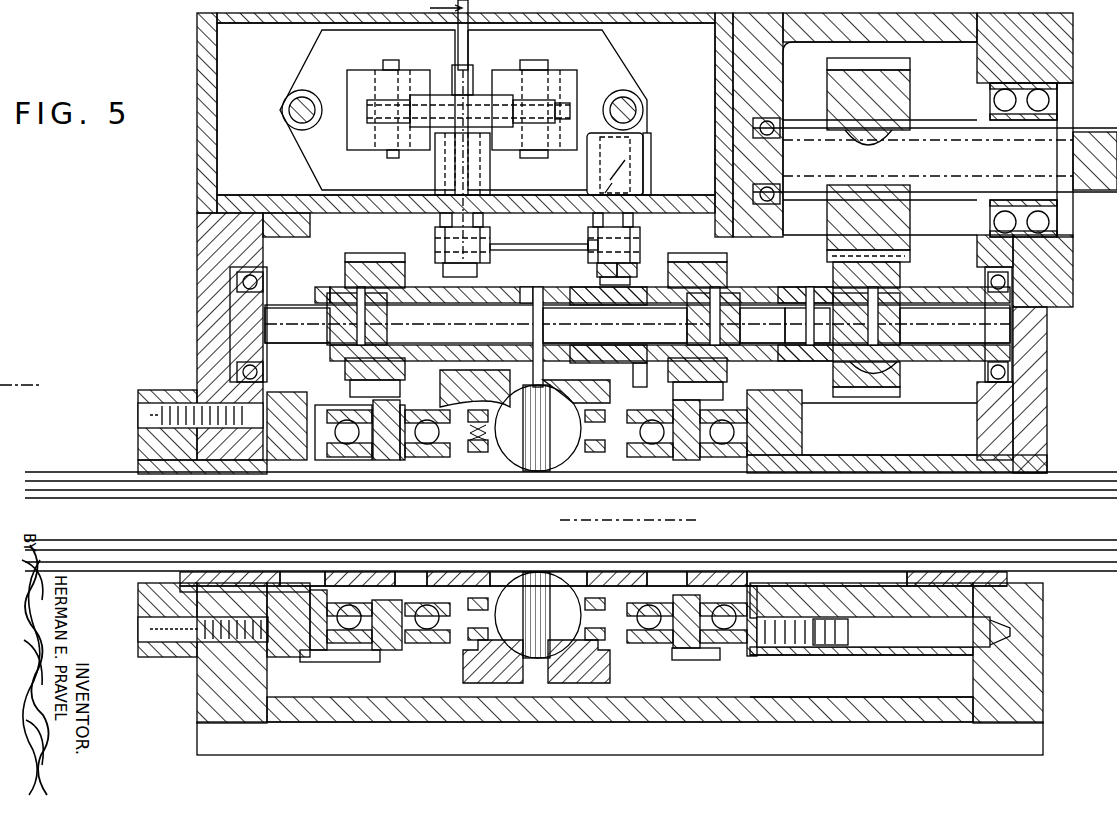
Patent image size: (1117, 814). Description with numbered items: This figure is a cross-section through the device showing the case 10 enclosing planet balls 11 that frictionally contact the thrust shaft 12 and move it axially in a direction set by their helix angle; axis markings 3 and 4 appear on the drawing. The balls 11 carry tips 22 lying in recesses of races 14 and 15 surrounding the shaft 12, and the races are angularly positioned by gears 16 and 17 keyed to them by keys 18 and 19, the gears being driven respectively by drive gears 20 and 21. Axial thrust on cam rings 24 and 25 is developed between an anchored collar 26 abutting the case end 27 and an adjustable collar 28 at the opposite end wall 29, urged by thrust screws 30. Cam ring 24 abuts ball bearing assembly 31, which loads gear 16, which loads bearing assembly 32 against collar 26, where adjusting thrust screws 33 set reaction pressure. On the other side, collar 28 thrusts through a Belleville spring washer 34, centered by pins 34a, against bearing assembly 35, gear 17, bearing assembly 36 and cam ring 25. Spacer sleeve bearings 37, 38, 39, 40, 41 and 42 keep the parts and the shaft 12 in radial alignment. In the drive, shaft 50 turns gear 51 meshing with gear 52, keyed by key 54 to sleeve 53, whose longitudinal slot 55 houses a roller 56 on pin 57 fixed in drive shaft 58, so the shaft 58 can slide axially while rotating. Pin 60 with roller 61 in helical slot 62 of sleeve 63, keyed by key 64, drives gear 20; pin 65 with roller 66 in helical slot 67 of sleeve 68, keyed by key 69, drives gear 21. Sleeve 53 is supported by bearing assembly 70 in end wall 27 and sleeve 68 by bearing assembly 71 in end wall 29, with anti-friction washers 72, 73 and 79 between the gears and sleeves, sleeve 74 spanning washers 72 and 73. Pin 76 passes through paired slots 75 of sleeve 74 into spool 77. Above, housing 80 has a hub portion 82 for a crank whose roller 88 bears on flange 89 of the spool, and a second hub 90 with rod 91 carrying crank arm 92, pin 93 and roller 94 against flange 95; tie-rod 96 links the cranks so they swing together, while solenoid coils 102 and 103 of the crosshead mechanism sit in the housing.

The main shaft axis 3 is at (624, 510).
The spring 4 is at (536, 525).
The case 10 is at (190, 260).
The planet rollers or balls 11 is at (538, 521).
The thrust shaft 12 is at (1080, 480).
The race 14 is at (400, 412).
The race 15 is at (470, 468).
The gear 16 is at (765, 392).
The gear 17 is at (340, 410).
The key 18 is at (710, 465).
The key 19 is at (415, 465).
The drive gear 20 is at (727, 258).
The drive gear 21 is at (372, 262).
The axial extensions or tips 22 is at (528, 468).
The cam ring 24 is at (612, 676).
The cam ring 25 is at (468, 672).
The axially anchored collar 26 is at (795, 656).
The end of the case 27 is at (1032, 405).
The axially adjustably movable collar 28 is at (295, 650).
The end wall 29 is at (210, 320).
The thrust screws 30 is at (200, 635).
The ball bearing assembly 31 is at (658, 638).
The ball bearing assembly 32 is at (748, 640).
The adjusting thrust screws 33 is at (850, 632).
The Belleville spring washer 34 is at (325, 645).
The pins 34a is at (334, 672).
The bearing assembly 35 is at (352, 645).
The bearing assembly 36 is at (425, 640).
The spacer sleeve bearing 37 is at (958, 572).
The spacer sleeve bearing 38 is at (718, 572).
The spacer sleeve bearing 39 is at (615, 572).
The spacer sleeve bearing 40 is at (468, 572).
The spacer sleeve bearing 41 is at (358, 572).
The spacer sleeve bearing 42 is at (245, 572).
The shaft 50 is at (938, 132).
The gear 51 is at (897, 88).
The gear 52 is at (900, 275).
The sleeve 53 is at (955, 362).
The key 54 is at (872, 368).
The longitudinal slot 55 is at (825, 292).
The roller 56 is at (878, 298).
The pin 57 is at (900, 322).
The drive shaft 58 is at (960, 324).
The pin 60 is at (762, 325).
The roller 61 is at (807, 325).
The helical slot 62 is at (740, 300).
The sleeve 63 is at (727, 372).
The key 64 is at (686, 324).
The pin 65 is at (395, 330).
The roller 66 is at (340, 312).
The helical slot 67 is at (335, 290).
The sleeve 68 is at (270, 320).
The key 69 is at (346, 372).
The bearing assembly 70 is at (985, 272).
The bearing assembly 71 is at (270, 272).
The anti-friction washer 72 is at (720, 300).
The anti-friction washer 73 is at (375, 300).
The sleeve 74 is at (650, 368).
The longitudinal slots 75 is at (520, 300).
The pin 76 is at (543, 320).
The spool 77 is at (535, 288).
The anti-friction washers 79 is at (782, 290).
The housing 80 is at (214, 154).
The hub portion 82 is at (478, 172).
The roller 88 is at (478, 272).
The flange 89 is at (455, 262).
The second hub 90 is at (645, 158).
The rod 91 is at (648, 172).
The crank arm 92 is at (640, 238).
The pin 93 is at (615, 265).
The roller 94 is at (653, 258).
The flange 95 is at (630, 278).
The tie-rod 96 is at (590, 244).
The solenoid coil 102 is at (507, 110).
The solenoid coil 103 is at (367, 110).